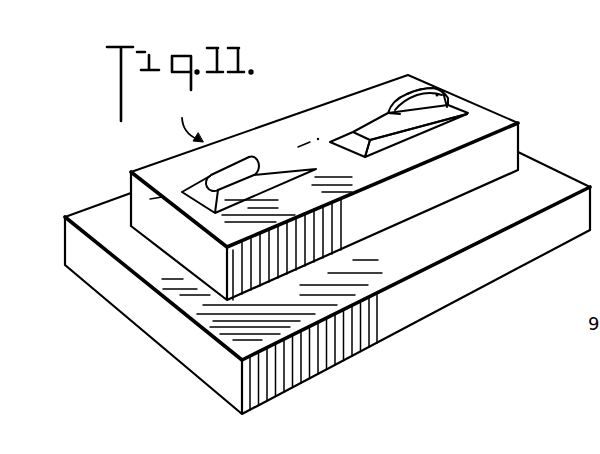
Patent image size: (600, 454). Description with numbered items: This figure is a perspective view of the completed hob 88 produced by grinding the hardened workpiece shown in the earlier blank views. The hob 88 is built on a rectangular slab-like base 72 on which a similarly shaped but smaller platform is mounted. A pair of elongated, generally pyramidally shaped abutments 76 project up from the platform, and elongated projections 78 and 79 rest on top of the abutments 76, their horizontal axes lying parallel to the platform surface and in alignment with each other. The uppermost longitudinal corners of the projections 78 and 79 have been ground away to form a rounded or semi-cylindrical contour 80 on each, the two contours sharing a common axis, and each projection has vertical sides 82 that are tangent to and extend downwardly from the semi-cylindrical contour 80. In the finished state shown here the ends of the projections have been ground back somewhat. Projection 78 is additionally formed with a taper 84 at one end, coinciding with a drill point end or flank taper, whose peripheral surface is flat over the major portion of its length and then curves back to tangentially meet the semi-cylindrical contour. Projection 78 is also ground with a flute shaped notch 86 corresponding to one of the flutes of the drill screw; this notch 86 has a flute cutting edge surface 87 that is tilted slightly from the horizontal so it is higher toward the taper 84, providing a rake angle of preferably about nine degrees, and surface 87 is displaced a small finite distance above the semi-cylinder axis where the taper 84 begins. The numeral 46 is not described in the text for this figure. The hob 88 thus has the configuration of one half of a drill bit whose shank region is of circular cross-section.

The mounting block upper surface 46 is at (325, 133).
The base 72 is at (102, 208).
The abutments 76 is at (258, 185).
The projection 78 is at (486, 78).
The projection 79 is at (213, 174).
The semi-cylindrical contour 80 is at (411, 92).
The vertical sides 82 is at (452, 99).
The taper 84 is at (398, 112).
The flute shaped notch 86 is at (420, 97).
The flute cutting edge surface 87 is at (413, 113).
The hob 88 is at (190, 120).